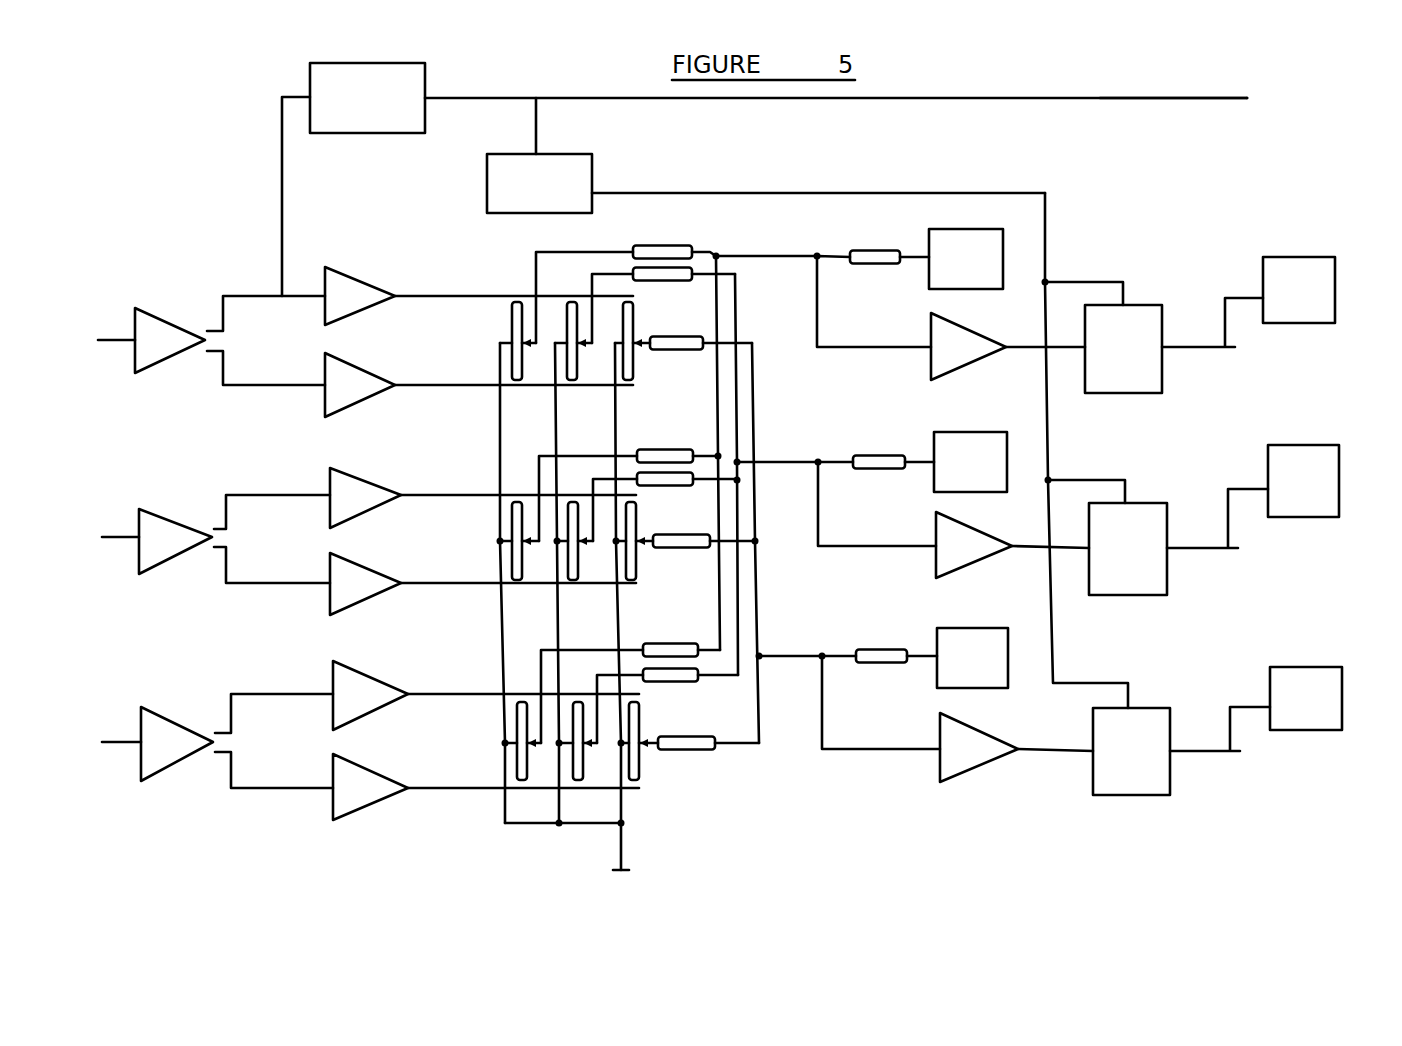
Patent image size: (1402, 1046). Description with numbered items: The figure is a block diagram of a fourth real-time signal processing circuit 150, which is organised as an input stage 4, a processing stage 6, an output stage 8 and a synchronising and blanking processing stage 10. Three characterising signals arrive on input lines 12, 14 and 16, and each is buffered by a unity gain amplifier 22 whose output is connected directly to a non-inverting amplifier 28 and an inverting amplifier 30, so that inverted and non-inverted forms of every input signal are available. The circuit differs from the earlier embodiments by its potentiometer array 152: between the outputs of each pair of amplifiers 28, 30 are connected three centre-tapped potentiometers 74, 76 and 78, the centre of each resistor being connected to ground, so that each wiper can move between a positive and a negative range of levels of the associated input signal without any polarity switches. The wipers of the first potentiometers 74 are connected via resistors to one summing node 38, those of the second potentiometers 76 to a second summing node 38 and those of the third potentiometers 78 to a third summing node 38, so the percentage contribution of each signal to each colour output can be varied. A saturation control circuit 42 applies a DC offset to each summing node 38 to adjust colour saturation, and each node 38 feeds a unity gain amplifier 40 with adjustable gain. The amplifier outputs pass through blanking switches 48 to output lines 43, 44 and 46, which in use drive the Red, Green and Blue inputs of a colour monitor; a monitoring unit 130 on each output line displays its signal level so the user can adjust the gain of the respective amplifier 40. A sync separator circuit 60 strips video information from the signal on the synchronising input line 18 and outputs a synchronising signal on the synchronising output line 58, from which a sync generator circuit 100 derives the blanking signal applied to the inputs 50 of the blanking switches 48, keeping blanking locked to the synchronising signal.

The input stage 4 is at (231, 800).
The processing stage 6 is at (795, 850).
The output stage 8 is at (1125, 823).
The synchronising and blanking processing stage 10 is at (578, 85).
The input line 12 is at (116, 348).
The input line 14 is at (118, 545).
The input line 16 is at (122, 750).
The synchronising input line 18 is at (282, 172).
The unity gain amplifier 22 is at (160, 343).
The non-inverting amplifier 28 is at (345, 305).
The inverting amplifier 30 is at (335, 388).
The summing node 38 is at (815, 254).
The unity gain amplifier 40 is at (955, 342).
The saturation control circuit 42 is at (972, 232).
The output line 43 is at (1200, 350).
The output line 44 is at (1215, 555).
The output line 46 is at (1220, 757).
The blanking switch 48 is at (1138, 323).
The input of blanking switch 50 is at (1097, 275).
The synchronising output line 58 is at (1161, 99).
The sync separator circuit 60 is at (345, 133).
The first potentiometer 74 is at (514, 318).
The second potentiometer 76 is at (572, 335).
The third potentiometer 78 is at (635, 345).
The sync generator circuit 100 is at (592, 186).
The monitoring unit 130 is at (1315, 323).
The fourth real-time signal processing circuit 150 is at (1258, 93).
The potentiometer array 152 is at (527, 829).